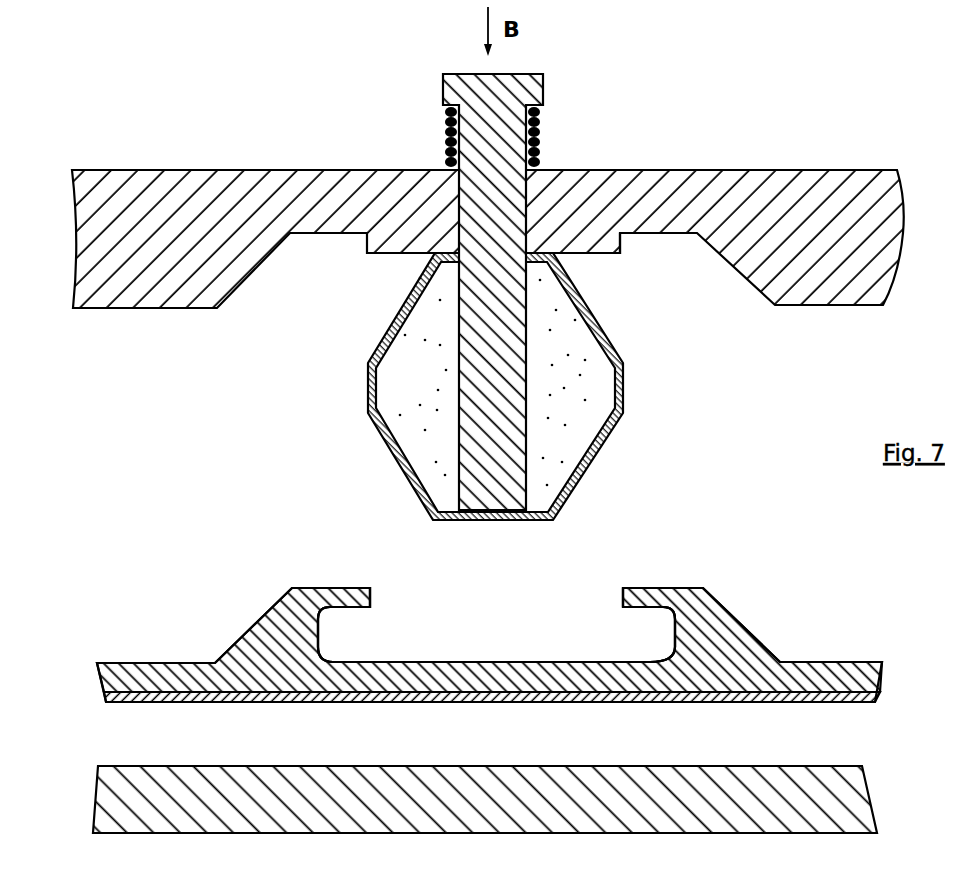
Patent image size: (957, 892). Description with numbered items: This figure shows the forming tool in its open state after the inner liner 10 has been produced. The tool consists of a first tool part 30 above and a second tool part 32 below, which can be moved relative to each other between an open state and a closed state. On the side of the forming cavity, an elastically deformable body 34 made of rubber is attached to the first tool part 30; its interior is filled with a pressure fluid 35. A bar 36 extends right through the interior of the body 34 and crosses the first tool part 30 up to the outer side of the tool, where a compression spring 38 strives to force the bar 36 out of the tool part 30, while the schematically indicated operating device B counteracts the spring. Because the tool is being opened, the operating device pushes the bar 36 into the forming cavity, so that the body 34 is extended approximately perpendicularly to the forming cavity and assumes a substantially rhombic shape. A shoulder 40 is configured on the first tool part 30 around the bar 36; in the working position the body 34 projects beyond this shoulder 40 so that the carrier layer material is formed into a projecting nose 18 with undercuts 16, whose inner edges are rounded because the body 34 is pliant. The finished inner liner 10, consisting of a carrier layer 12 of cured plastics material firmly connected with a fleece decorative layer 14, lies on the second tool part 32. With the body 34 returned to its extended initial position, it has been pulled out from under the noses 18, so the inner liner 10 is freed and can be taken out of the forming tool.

The inner liner 10 is at (823, 614).
The carrier layer 12 is at (855, 668).
The decorative layer 14 is at (867, 697).
The undercuts 16 is at (347, 618).
The projecting nose 18 is at (353, 588).
The first tool part 30 is at (893, 210).
The second tool part 32 is at (860, 810).
The elastically deformable body 34 is at (623, 383).
The pressure fluid 35 is at (489, 382).
The bar 36 is at (488, 158).
The compression spring 38 is at (538, 143).
The shoulder 40 is at (625, 243).